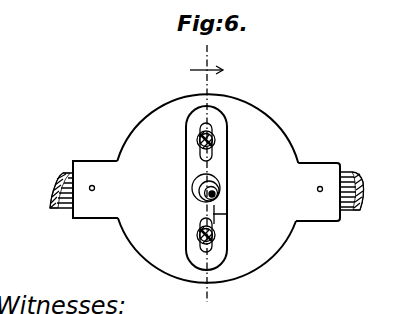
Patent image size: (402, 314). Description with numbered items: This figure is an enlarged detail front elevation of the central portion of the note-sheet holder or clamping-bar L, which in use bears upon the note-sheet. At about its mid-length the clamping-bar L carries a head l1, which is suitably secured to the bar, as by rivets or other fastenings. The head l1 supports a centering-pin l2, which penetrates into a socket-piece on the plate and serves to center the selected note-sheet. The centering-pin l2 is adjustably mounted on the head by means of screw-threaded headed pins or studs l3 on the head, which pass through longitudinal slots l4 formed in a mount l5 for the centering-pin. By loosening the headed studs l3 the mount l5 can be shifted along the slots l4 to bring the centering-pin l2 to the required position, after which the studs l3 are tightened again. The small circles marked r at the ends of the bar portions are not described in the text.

The head l1 is at (264, 126).
The centering-pin l2 is at (204, 184).
The headed studs l3 is at (199, 143).
The longitudinal slots l4 is at (212, 156).
The mount l5 is at (214, 214).
The clamping-bar L is at (72, 189).
The pivot r is at (91, 191).